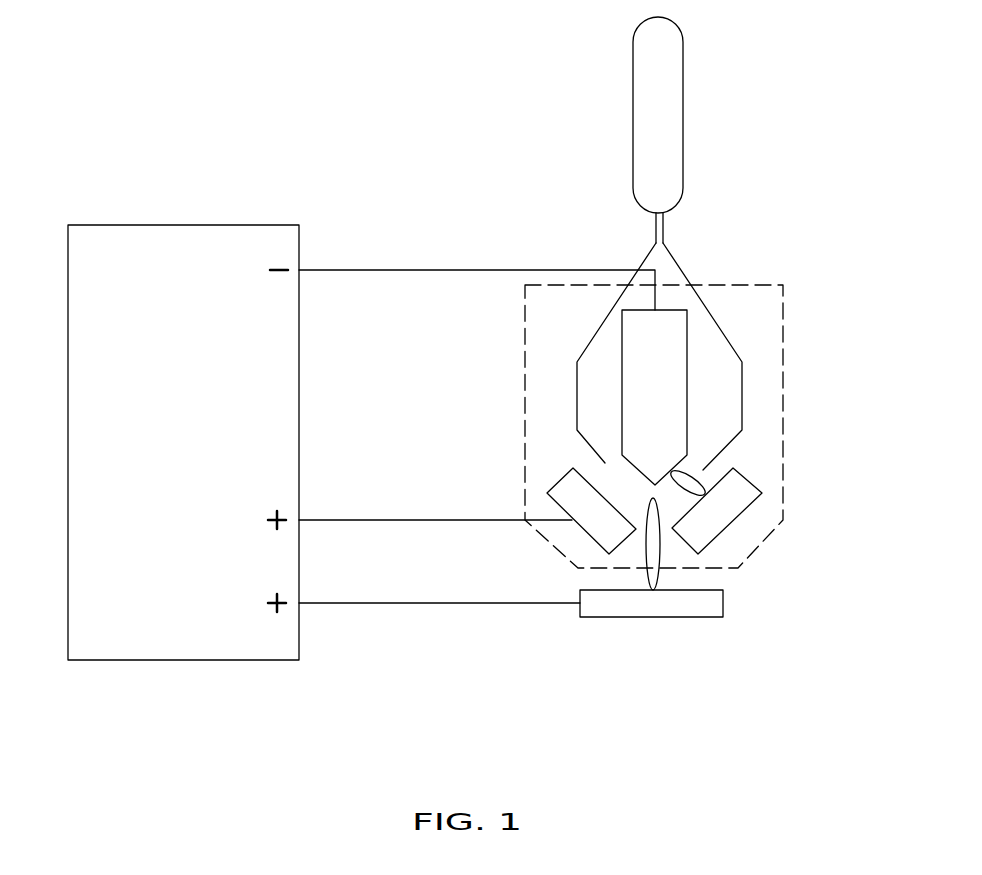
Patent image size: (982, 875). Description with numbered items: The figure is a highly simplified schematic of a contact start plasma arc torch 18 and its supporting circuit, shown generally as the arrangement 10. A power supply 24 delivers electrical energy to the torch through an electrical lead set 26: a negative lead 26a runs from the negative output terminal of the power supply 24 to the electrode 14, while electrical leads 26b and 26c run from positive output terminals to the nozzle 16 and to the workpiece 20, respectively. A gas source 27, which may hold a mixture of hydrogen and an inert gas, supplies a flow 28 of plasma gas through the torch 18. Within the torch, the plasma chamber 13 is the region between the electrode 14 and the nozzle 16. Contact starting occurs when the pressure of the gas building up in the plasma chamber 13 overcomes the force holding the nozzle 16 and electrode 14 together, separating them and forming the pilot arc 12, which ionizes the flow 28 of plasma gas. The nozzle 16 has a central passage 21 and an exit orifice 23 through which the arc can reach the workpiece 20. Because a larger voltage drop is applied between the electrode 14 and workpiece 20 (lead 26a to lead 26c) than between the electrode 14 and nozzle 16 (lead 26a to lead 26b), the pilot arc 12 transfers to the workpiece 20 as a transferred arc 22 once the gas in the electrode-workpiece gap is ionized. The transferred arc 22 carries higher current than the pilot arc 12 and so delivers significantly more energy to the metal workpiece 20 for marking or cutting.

The photoplethysmographic apparatus 10 is at (382, 236).
The pilot arc 12 is at (693, 472).
The plasma chamber 13 is at (718, 468).
The electrode 14 is at (688, 342).
The nozzle 16 is at (572, 468).
The plasma arc torch 18 is at (546, 378).
The workpiece 20 is at (723, 603).
The central passage 21 is at (657, 508).
The transferred arc 22 is at (667, 557).
The exit orifice 23 is at (637, 530).
The power supply 24 is at (243, 225).
The electrical lead set 26 is at (470, 622).
The negative lead 26a is at (600, 270).
The electrical lead 26b is at (405, 520).
The electrical lead 26c is at (403, 603).
The gas source 27 is at (683, 64).
The flow 28 is at (591, 446).